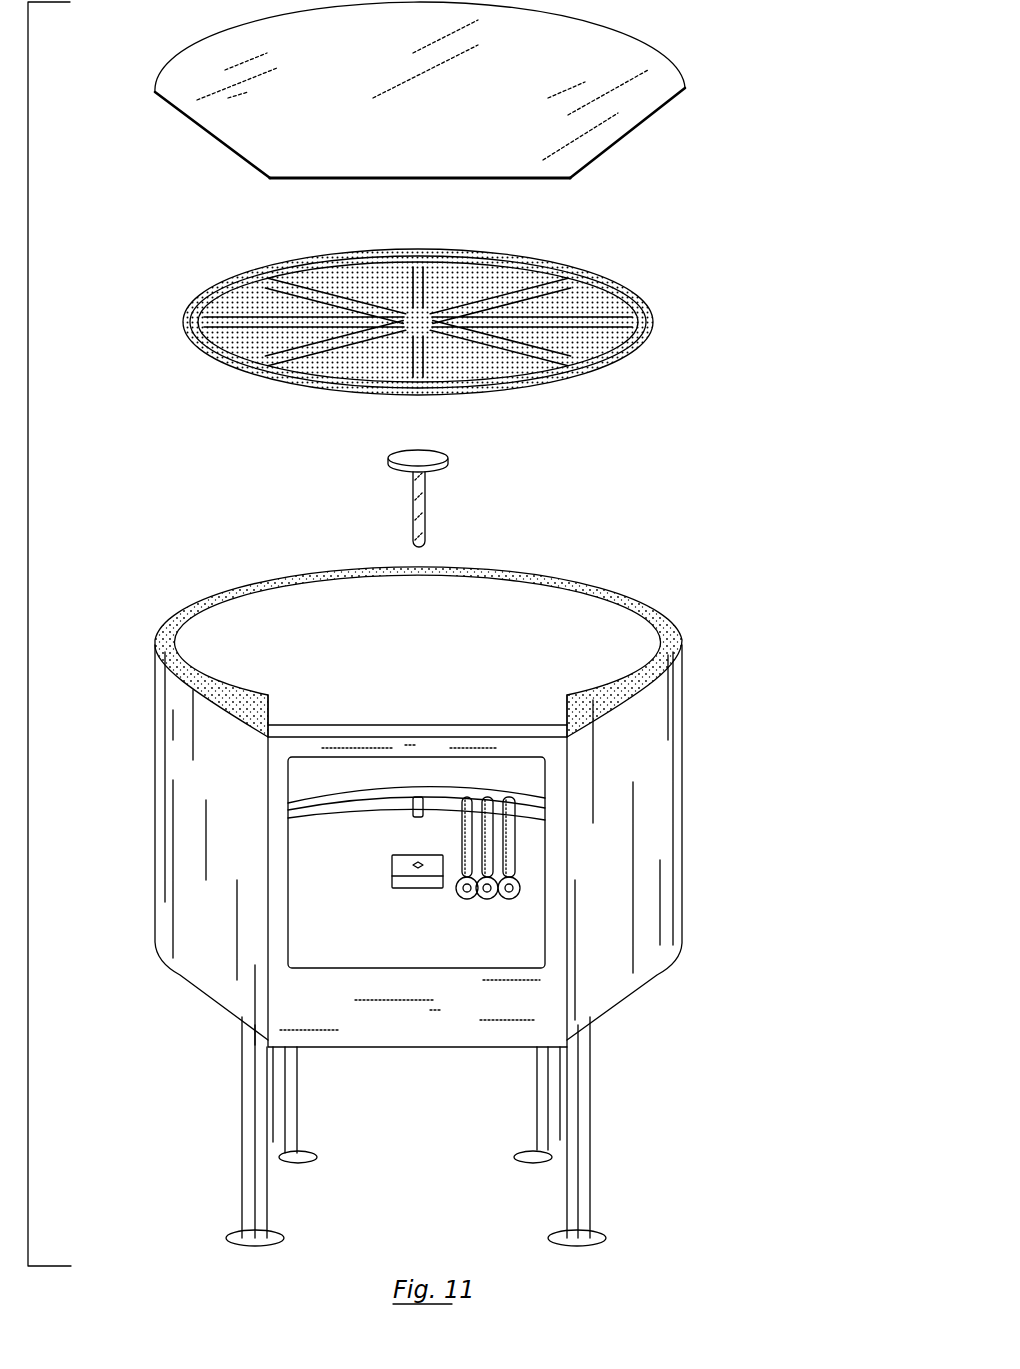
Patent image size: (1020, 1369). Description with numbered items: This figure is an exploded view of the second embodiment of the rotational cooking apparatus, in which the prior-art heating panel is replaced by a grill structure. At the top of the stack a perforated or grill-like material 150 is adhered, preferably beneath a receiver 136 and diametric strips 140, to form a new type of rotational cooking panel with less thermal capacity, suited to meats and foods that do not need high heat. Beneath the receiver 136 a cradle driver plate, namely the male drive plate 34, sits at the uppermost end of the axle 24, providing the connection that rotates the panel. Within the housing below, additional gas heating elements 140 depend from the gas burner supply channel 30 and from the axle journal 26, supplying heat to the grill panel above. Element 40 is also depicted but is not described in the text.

The glass top 40 is at (602, 42).
The perforated or grill-like material 150 is at (648, 343).
The receiver 136 is at (498, 390).
The diametric strips / gas heating elements 140 is at (547, 268).
The male drive plate 34 is at (448, 462).
The axle 24 is at (425, 529).
The gas burner supply channel 30 is at (545, 800).
The axle journal 26 is at (443, 887).